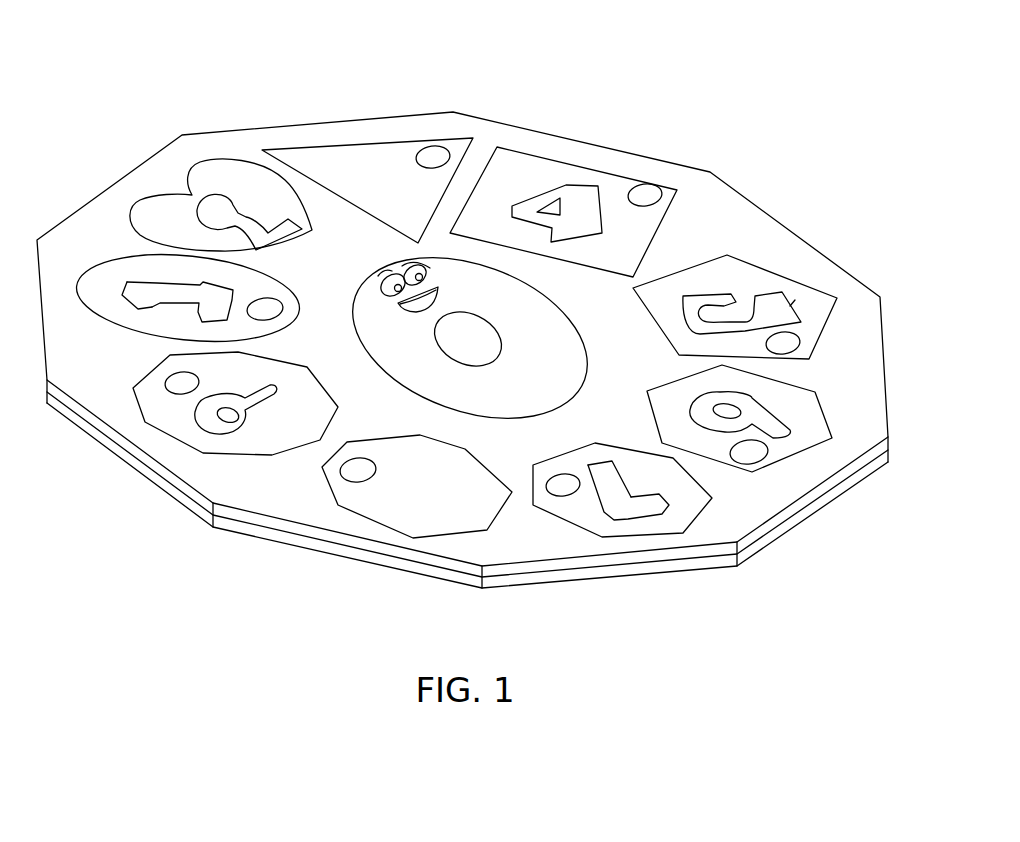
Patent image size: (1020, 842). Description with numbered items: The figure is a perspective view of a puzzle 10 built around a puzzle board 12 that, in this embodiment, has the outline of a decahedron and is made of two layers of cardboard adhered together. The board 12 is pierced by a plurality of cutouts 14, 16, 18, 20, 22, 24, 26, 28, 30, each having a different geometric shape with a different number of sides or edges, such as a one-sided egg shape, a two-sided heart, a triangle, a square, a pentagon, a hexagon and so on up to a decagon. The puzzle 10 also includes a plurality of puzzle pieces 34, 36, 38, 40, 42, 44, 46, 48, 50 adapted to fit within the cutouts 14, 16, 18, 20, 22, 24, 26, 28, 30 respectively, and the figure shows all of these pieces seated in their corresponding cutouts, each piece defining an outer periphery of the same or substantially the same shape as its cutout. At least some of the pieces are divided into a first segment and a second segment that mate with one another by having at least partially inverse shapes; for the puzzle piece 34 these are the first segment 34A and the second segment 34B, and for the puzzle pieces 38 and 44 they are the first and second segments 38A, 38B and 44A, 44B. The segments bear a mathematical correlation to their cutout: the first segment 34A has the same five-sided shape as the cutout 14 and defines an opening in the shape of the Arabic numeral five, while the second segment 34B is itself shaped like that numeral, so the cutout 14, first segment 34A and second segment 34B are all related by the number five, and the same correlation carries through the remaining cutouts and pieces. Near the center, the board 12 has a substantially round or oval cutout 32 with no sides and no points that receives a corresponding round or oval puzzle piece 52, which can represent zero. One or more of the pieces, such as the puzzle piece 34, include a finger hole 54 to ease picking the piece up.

The puzzle 10 is at (638, 85).
The puzzle board 12 is at (710, 185).
The cutout 14 is at (772, 270).
The cutout 16 is at (820, 412).
The cutout 18 is at (692, 523).
The cutout 20 is at (448, 533).
The cutout 22 is at (238, 455).
The cutout 24 is at (122, 330).
The cutout 26 is at (210, 160).
The cutout 28 is at (308, 145).
The cutout 30 is at (522, 148).
The round or oval cutout 32 is at (572, 328).
The puzzle piece 34 is at (737, 270).
The first segment 34A is at (815, 303).
The second segment 34B is at (793, 317).
The puzzle piece 36 is at (790, 447).
The puzzle piece 38 is at (565, 512).
The first segment 38A is at (603, 528).
The second segment 38B is at (658, 510).
The puzzle piece 40 is at (373, 507).
The puzzle piece 42 is at (183, 430).
The puzzle piece 44 is at (87, 300).
The first segment 44A is at (95, 283).
The second segment 44B is at (182, 300).
The puzzle piece 46 is at (152, 217).
The puzzle piece 48 is at (285, 155).
The puzzle piece 50 is at (503, 158).
The round or oval puzzle piece 52 is at (382, 357).
The finger hole 54 is at (798, 347).